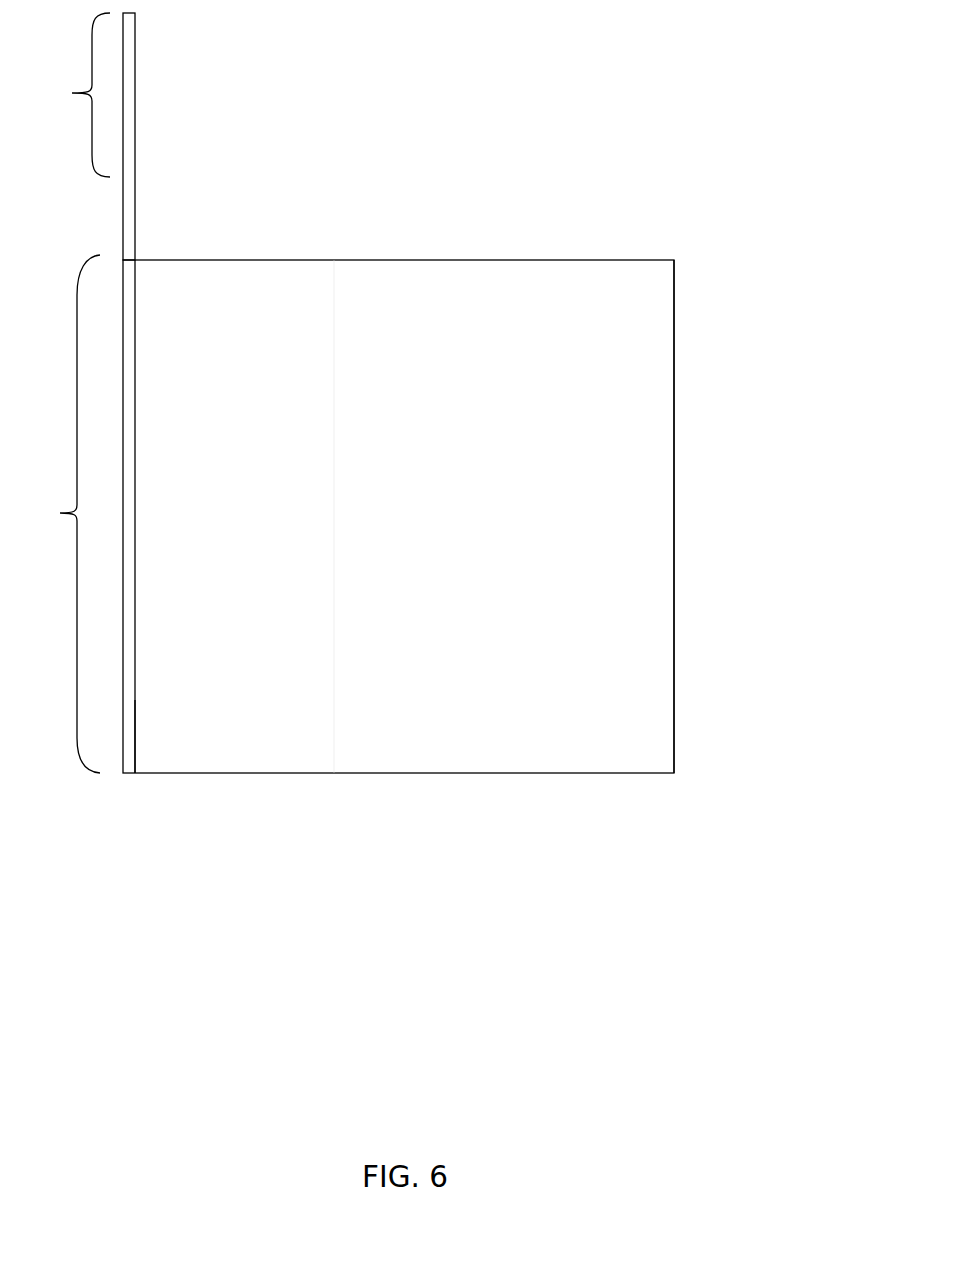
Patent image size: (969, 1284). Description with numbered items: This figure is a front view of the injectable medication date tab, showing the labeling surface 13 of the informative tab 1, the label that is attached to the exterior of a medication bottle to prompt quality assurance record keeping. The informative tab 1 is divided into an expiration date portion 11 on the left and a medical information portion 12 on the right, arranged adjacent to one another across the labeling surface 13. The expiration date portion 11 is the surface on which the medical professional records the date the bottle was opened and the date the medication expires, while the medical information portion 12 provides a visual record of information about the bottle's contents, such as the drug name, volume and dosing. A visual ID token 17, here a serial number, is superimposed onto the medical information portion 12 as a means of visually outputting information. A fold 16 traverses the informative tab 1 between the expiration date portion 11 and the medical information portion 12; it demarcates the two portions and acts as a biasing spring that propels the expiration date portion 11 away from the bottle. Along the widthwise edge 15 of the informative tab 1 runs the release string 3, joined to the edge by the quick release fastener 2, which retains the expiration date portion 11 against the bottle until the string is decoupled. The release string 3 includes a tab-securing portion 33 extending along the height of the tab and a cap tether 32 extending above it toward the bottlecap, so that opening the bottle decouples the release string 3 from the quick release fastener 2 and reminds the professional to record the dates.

The informative tab 1 is at (721, 503).
The quick release fastener 2 is at (130, 283).
The release string 3 is at (130, 165).
The expiration date portion 11 is at (253, 768).
The medical information portion 12 is at (540, 768).
The labeling surface 13 is at (649, 345).
The widthwise edge 15 is at (135, 742).
The fold 16 is at (334, 292).
The visual ID token 17 is at (595, 327).
The cap tether 32 is at (73, 95).
The tab-securing portion 33 is at (61, 514).